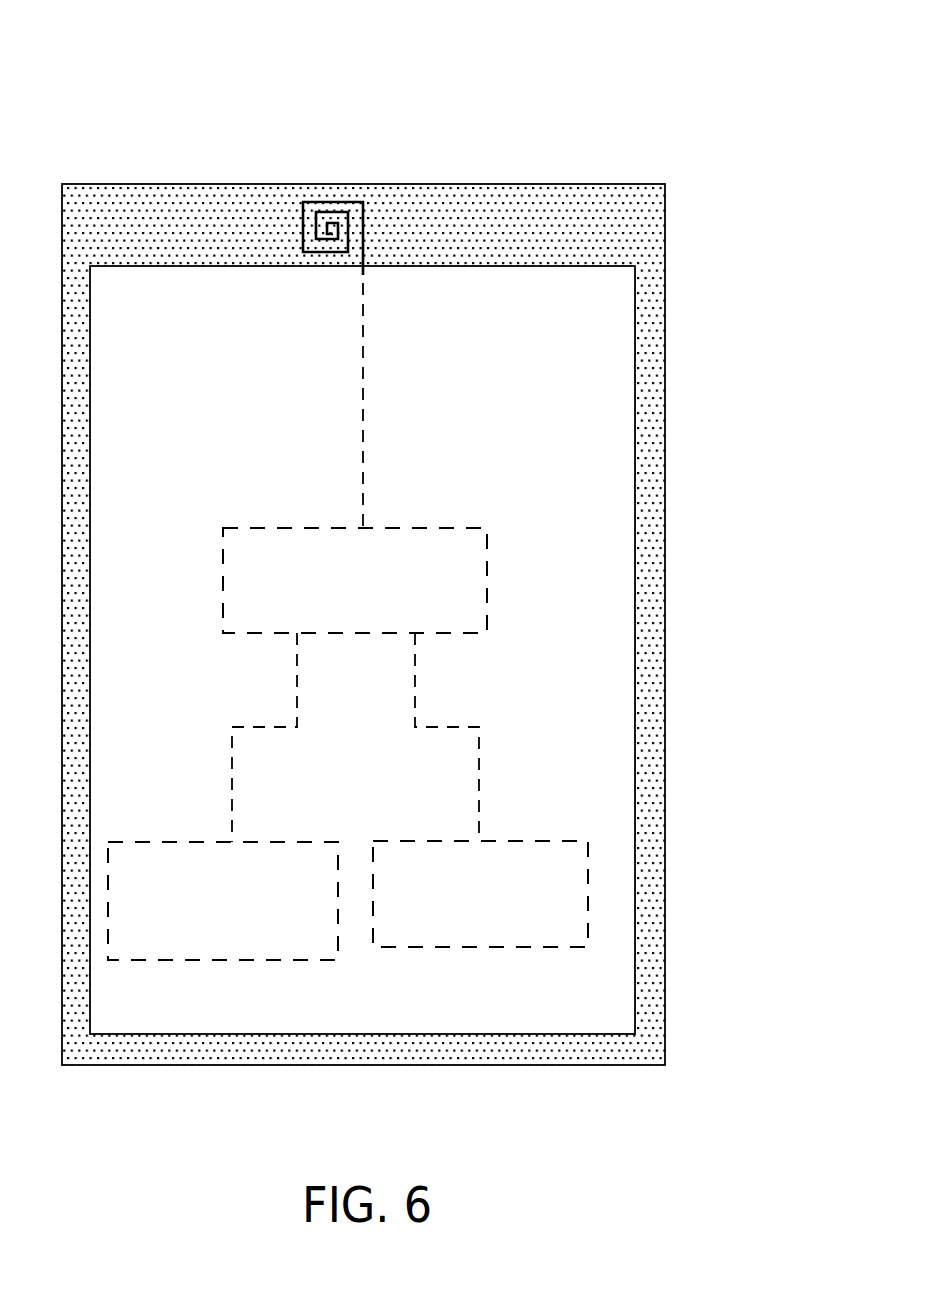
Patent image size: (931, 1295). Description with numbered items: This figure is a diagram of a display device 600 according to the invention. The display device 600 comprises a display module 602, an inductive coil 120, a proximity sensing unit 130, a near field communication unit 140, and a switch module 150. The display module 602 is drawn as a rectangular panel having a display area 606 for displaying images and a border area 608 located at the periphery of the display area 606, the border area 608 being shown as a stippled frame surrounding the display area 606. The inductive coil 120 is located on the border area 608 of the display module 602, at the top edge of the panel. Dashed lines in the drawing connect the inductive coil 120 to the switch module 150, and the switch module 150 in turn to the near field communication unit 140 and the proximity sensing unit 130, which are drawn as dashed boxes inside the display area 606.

The display device 600 is at (639, 108).
The display module 602 is at (683, 402).
The display area 606 is at (598, 615).
The border area 608 is at (652, 506).
The inductive coil 120 is at (329, 202).
The proximity sensing unit 130 is at (540, 838).
The near field communication unit 140 is at (170, 838).
The switch module 150 is at (273, 527).